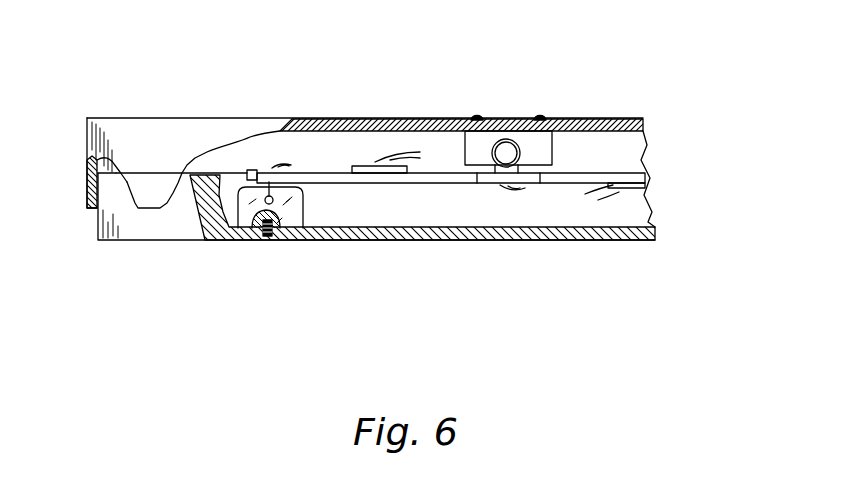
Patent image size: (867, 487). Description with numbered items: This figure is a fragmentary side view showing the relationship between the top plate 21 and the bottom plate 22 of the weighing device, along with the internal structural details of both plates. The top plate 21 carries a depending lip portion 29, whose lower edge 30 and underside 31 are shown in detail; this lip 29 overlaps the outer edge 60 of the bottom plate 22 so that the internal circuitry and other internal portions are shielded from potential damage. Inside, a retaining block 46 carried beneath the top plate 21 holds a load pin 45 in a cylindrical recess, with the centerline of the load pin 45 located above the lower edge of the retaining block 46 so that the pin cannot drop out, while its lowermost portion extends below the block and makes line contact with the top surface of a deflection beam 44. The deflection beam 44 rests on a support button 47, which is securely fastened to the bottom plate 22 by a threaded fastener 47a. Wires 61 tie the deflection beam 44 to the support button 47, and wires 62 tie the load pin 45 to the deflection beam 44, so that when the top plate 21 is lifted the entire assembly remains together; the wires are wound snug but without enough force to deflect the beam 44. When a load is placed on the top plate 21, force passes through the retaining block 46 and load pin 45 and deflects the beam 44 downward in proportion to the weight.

The top plate 21 is at (222, 119).
The bottom plate 22 is at (207, 240).
The depending lip portion 29 is at (87, 172).
The lower edge 30 is at (138, 208).
The underside 31 is at (168, 240).
The deflection beam 44 is at (605, 172).
The load pin 45 is at (508, 150).
The retaining block 46 is at (553, 147).
The support button 47 is at (297, 208).
The threaded fastener 47a is at (267, 240).
The outer edge 60 is at (105, 154).
The wire 61 is at (282, 166).
The wire 62 is at (512, 188).